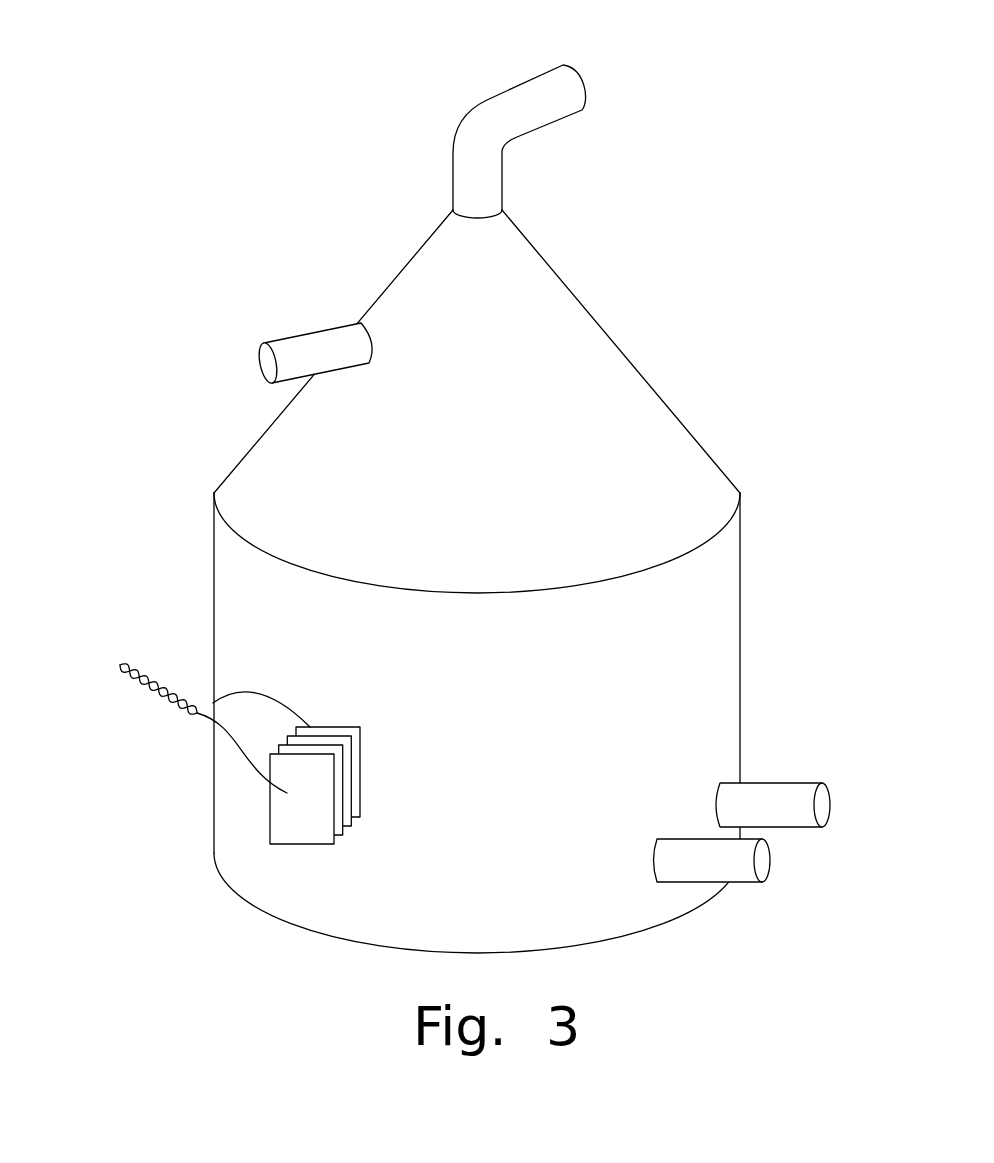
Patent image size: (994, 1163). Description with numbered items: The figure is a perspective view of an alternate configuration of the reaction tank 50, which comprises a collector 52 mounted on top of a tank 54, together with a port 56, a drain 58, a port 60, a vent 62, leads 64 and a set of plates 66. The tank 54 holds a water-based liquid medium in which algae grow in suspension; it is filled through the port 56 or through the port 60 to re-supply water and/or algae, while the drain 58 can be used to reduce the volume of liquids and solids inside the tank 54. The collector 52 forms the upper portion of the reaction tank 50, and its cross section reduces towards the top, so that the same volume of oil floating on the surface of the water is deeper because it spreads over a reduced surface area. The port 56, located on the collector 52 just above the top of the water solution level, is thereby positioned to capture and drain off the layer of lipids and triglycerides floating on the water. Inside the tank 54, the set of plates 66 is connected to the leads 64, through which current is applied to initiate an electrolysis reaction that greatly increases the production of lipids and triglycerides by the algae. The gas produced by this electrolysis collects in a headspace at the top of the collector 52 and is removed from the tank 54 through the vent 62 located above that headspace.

The reaction tank 50 is at (782, 249).
The collector 52 is at (572, 347).
The tank 54 is at (705, 683).
The port 56 is at (312, 330).
The drain 58 is at (773, 782).
The port 60 is at (712, 882).
The vent 62 is at (487, 98).
The leads 64 is at (160, 685).
The set of plates 66 is at (287, 835).